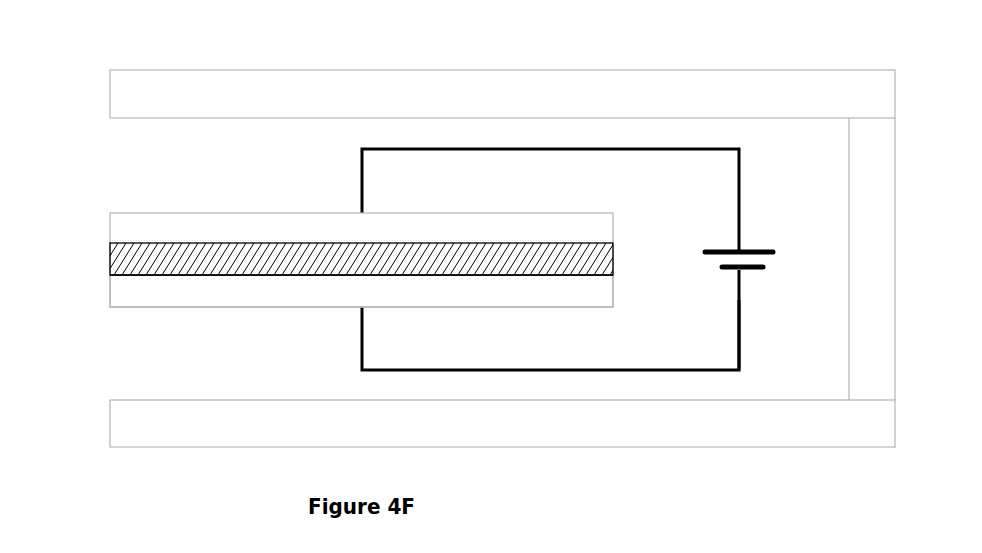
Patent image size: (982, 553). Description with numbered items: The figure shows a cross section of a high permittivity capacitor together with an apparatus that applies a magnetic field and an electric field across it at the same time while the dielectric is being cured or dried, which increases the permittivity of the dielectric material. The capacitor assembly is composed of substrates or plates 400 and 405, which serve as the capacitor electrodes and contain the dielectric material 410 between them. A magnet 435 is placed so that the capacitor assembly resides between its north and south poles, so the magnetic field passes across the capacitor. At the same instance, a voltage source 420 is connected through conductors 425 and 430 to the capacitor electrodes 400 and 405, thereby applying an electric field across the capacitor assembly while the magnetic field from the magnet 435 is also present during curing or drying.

The substrate or plate 400 is at (97, 228).
The substrate or plate 405 is at (97, 292).
The dielectric material 410 is at (626, 259).
The voltage source 420 is at (785, 259).
The conductor 425 is at (752, 197).
The conductor 430 is at (752, 325).
The magnet 435 is at (615, 60).